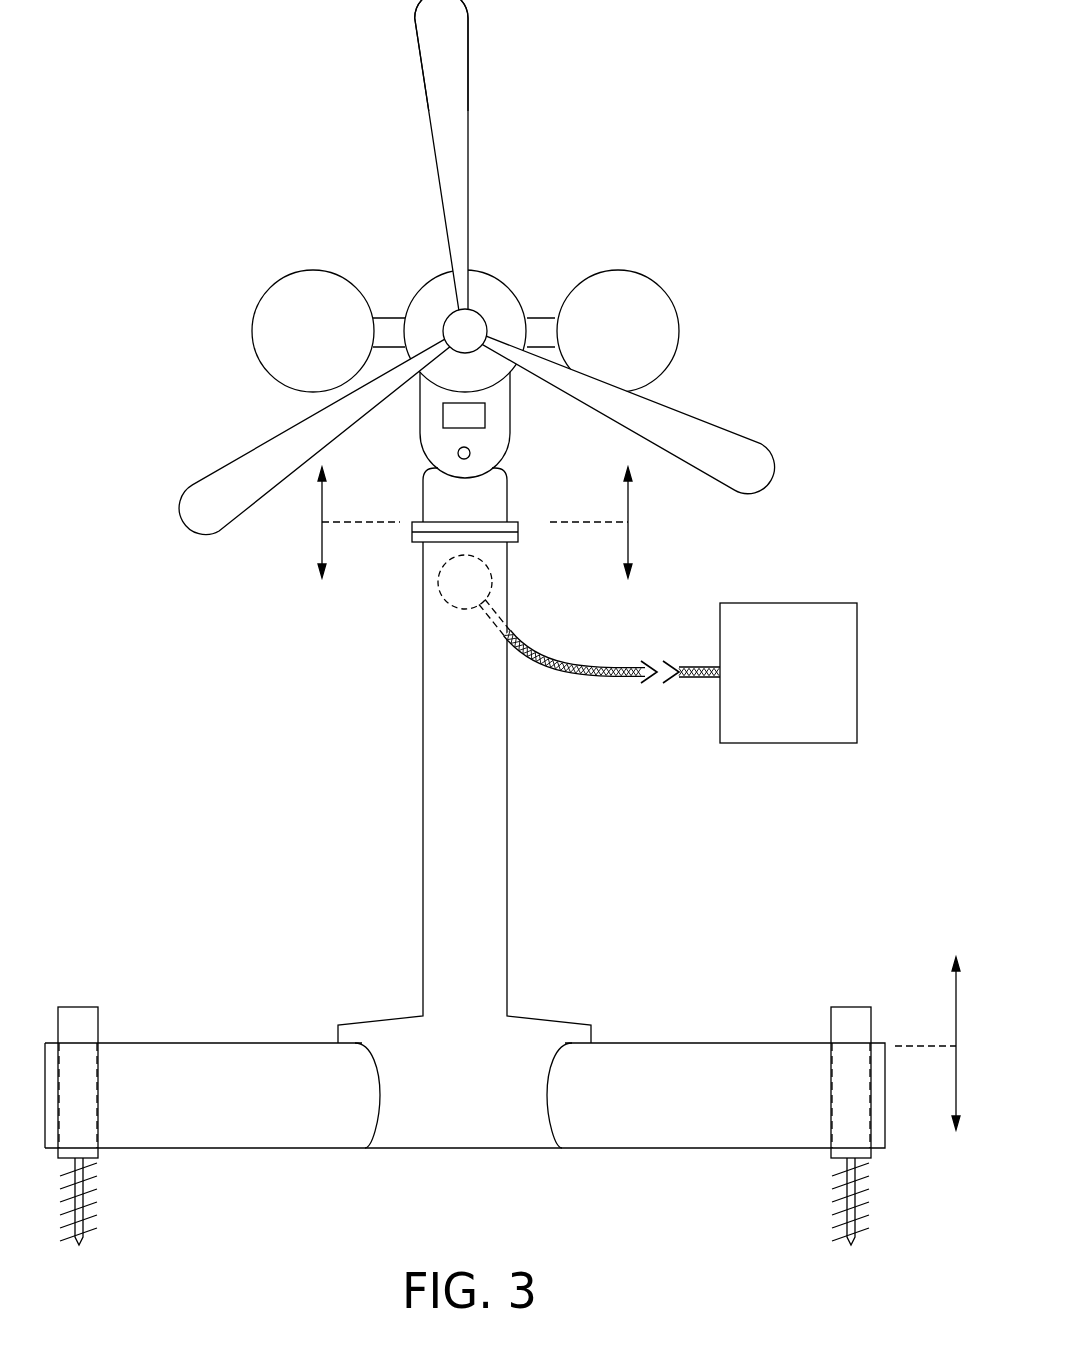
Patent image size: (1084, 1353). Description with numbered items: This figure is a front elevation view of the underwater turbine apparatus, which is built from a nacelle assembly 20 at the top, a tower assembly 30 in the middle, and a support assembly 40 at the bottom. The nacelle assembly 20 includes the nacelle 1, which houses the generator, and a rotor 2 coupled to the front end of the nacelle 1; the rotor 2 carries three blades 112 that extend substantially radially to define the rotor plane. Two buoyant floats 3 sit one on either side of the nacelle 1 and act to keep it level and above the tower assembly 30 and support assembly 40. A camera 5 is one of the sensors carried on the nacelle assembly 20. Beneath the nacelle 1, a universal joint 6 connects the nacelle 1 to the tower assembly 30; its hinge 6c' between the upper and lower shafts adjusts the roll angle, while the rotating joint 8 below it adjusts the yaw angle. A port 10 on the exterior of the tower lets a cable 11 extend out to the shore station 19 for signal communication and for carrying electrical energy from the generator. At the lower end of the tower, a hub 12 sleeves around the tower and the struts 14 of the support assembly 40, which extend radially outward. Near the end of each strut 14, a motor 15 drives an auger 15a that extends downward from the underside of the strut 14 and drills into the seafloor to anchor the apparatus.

The nacelle 1 is at (503, 285).
The rotor 2 is at (457, 147).
The blades 112 is at (452, 72).
The floats 3 is at (333, 283).
The camera 5 is at (449, 414).
The universal joint 6 is at (488, 438).
The hinge 6c' is at (519, 470).
The rotating joint 8 is at (511, 542).
The port 10 is at (480, 588).
The cable 11 is at (563, 671).
The hub 12 is at (530, 1030).
The struts 14 is at (237, 1057).
The motor 15 is at (80, 1013).
The auger 15a is at (95, 1183).
The shore station 19 is at (800, 683).
The nacelle assembly 20 is at (494, 494).
The tower assembly 30 is at (639, 784).
The support assembly 40 is at (937, 1092).